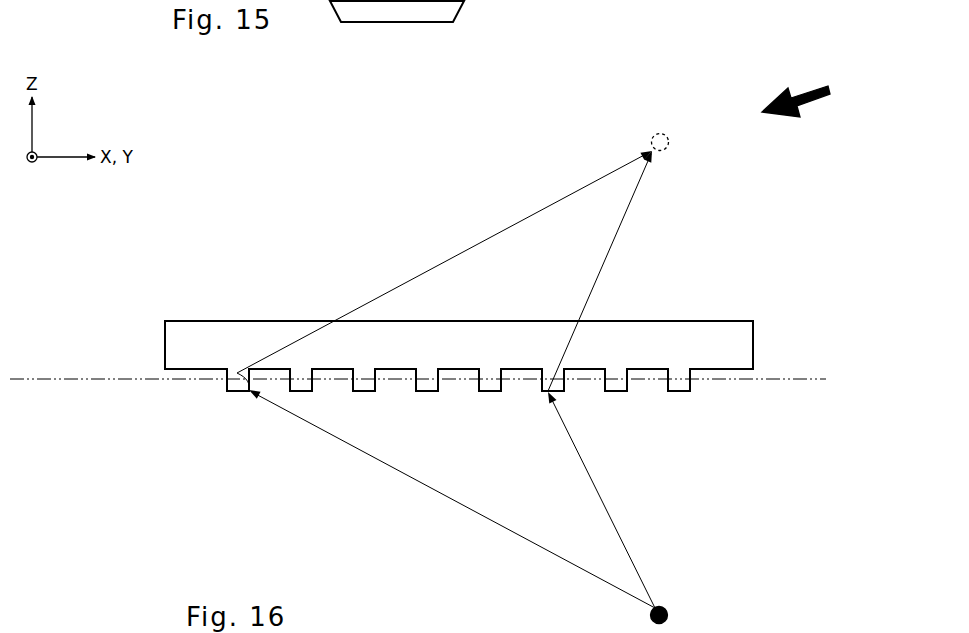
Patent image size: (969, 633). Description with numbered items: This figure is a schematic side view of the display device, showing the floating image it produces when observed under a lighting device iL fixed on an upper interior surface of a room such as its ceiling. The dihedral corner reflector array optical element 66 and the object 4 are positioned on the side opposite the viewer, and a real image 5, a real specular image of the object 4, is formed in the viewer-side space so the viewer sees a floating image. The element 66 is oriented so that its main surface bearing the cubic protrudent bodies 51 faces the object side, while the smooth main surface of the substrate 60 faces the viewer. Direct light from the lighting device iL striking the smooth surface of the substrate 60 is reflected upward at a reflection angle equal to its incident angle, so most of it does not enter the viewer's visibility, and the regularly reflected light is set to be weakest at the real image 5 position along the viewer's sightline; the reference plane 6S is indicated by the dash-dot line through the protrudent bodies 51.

In FIG. 15, the lighting device iL is at (455, 17).
In FIG. 16, the object 4 is at (668, 607).
In FIG. 16, the real image 5 is at (667, 134).
In FIG. 16, the cubic protrudent bodies 51 is at (233, 398).
In FIG. 16, the substrate 60 is at (165, 348).
In FIG. 16, the dihedral corner reflector array optical element 66 is at (698, 311).
In FIG. 16, the reference plane 6S is at (778, 381).